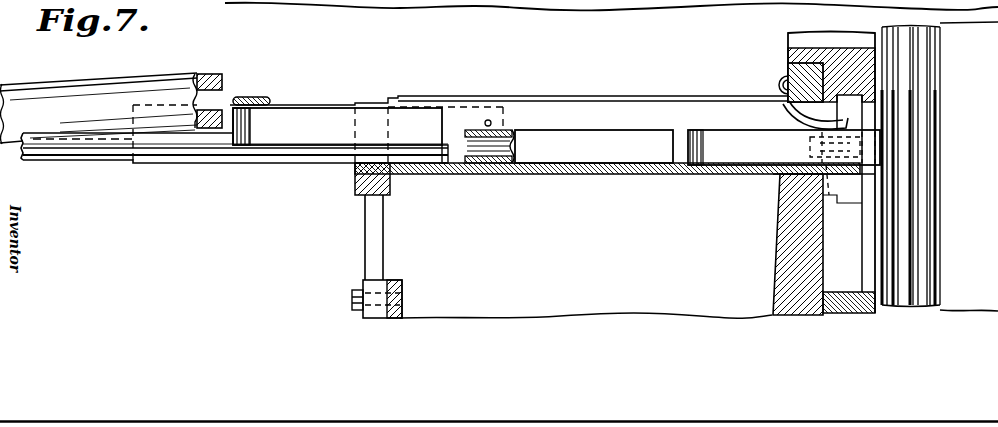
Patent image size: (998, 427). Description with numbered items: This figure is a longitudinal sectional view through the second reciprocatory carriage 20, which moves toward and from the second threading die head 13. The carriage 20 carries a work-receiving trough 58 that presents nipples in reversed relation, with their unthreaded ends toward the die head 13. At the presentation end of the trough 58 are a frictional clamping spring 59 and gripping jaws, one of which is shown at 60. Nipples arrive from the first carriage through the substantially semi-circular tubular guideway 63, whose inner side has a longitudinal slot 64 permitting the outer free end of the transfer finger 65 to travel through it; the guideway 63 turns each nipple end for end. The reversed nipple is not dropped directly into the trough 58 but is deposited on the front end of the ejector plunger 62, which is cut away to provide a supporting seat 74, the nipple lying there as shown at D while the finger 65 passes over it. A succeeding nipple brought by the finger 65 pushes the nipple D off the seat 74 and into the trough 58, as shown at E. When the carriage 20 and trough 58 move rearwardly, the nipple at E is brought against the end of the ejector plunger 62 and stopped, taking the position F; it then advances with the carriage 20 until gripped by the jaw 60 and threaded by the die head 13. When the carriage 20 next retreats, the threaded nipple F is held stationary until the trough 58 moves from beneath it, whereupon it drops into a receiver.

The threading die head 13 is at (940, 164).
The second reciprocatory carriage 20 is at (372, 263).
The work-receiving trough 58 is at (622, 175).
The frictional clamping spring 59 is at (797, 126).
The gripping jaw 60 is at (834, 204).
The ejector plunger 62 is at (103, 143).
The tubular guideway 63 is at (27, 97).
The longitudinal slot 64 is at (220, 97).
The transfer finger 65 is at (268, 99).
The supporting seat 74 is at (273, 142).
The nipple in position D is at (368, 135).
The nipple in position E is at (569, 146).
The nipple in position F is at (784, 147).